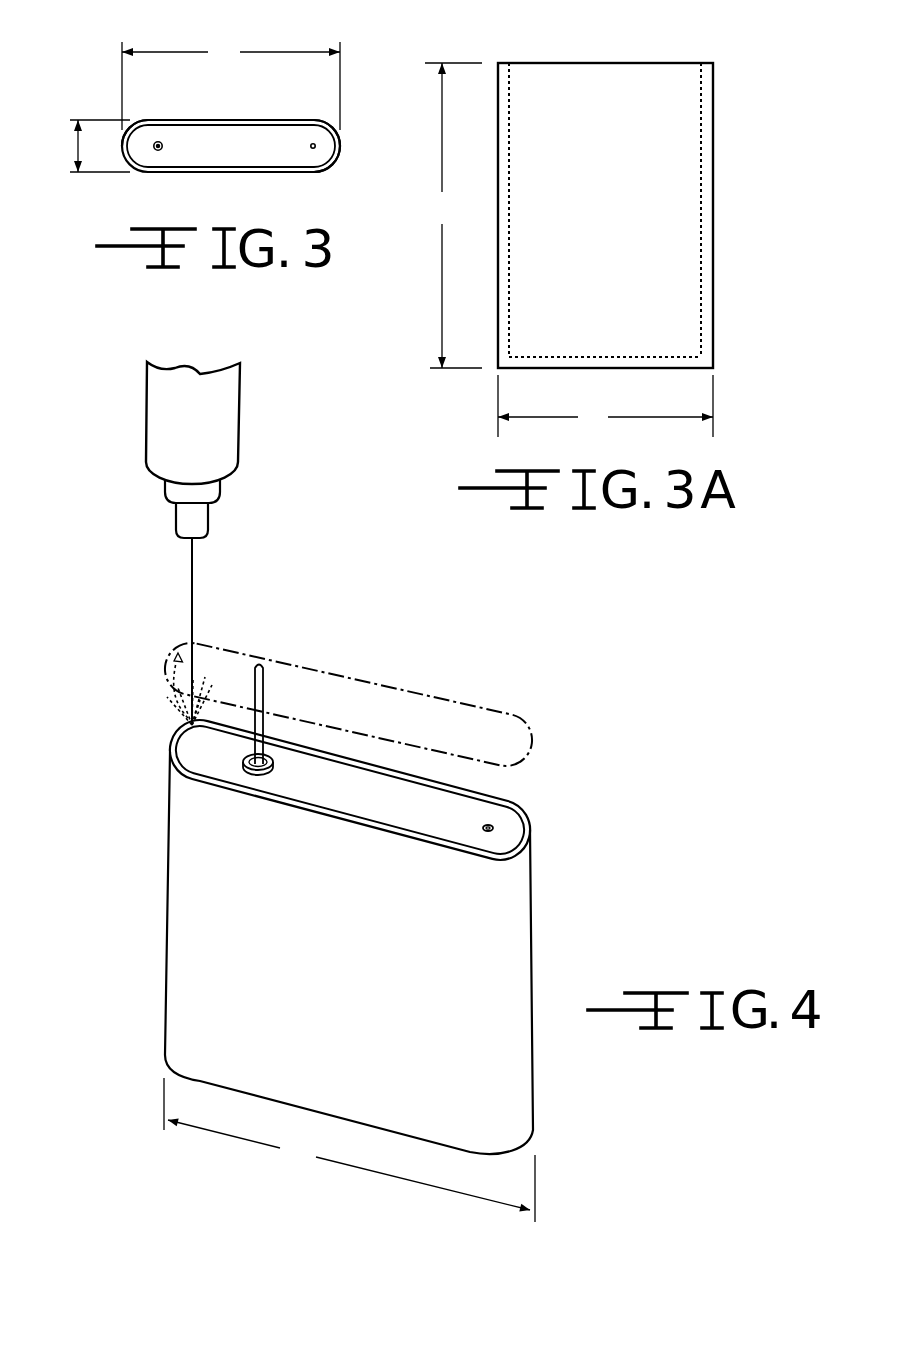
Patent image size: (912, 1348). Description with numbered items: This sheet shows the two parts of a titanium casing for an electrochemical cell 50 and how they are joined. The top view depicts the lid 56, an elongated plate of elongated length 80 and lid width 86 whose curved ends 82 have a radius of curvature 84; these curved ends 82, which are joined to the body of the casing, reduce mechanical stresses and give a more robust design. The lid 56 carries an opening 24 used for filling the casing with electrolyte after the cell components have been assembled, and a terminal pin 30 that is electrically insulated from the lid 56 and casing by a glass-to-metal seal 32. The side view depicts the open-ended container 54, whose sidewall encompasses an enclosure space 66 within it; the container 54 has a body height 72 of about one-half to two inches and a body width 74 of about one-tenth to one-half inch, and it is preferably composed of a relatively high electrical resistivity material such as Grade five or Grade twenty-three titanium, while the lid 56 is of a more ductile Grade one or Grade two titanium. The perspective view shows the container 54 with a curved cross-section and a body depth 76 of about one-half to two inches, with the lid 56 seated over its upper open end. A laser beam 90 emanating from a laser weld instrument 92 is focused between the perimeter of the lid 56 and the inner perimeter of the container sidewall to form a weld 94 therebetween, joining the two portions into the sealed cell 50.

In FIG. 3, the opening 24 is at (320, 146).
In FIG. 4, the opening 24 is at (488, 823).
In FIG. 3, the terminal pin 30 is at (155, 142).
In FIG. 4, the terminal pin 30 is at (263, 682).
In FIG. 3, the glass-to-metal seal 32 is at (161, 143).
In FIG. 4, the glass-to-metal seal 32 is at (271, 763).
In FIG. 4, the electrochemical cell 50 is at (113, 901).
In FIG. 3A, the open-ended container 54 is at (740, 103).
In FIG. 4, the open-ended container 54 is at (564, 938).
In FIG. 3, the lid 56 is at (143, 181).
In FIG. 4, the lid 56 is at (528, 823).
In FIG. 3A, the enclosure space 66 is at (612, 118).
In FIG. 3A, the body height 72 is at (453, 215).
In FIG. 3A, the body width 74 is at (605, 406).
In FIG. 4, the body depth 76 is at (349, 1150).
In FIG. 3, the length 80 is at (231, 83).
In FIG. 3, the curved ends 82 is at (120, 143).
In FIG. 3, the radius of curvature 84 is at (330, 168).
In FIG. 3, the lid width 86 is at (72, 146).
In FIG. 4, the laser beam 90 is at (194, 576).
In FIG. 4, the laser weld instrument 92 is at (241, 428).
In FIG. 4, the weld 94 is at (170, 748).